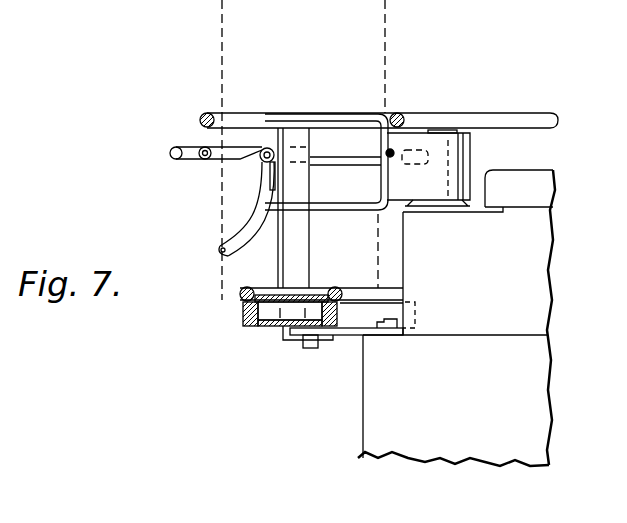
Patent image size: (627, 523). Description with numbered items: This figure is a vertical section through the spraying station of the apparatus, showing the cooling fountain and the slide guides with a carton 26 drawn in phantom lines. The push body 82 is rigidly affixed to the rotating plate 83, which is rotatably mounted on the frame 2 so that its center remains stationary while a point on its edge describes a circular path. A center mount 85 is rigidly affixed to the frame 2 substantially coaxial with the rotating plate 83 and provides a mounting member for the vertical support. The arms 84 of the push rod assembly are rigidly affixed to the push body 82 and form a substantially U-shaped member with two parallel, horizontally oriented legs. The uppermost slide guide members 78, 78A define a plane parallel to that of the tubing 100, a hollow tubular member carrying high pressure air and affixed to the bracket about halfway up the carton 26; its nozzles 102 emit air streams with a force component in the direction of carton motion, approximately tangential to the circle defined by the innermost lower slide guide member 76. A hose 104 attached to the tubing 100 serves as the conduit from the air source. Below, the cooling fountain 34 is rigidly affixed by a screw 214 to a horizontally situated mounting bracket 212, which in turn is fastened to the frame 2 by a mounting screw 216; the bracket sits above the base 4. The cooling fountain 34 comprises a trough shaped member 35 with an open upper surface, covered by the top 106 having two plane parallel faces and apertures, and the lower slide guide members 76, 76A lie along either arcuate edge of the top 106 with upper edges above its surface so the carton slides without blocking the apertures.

The frame 2 is at (566, 308).
The base 4 is at (560, 413).
The carton 26 is at (222, 48).
The cooling fountain 34 is at (246, 322).
The trough shaped member 35 is at (256, 328).
The lower slide guide member 76 is at (337, 290).
The lower slide guide member 76A is at (243, 303).
The upper slide guide member 78 is at (526, 127).
The upper slide guide member 78A is at (203, 113).
The push body 82 is at (436, 193).
The rotating plate 83 is at (552, 244).
The arms 84 is at (359, 119).
The center mount 85 is at (555, 191).
The tubing 100 is at (170, 151).
The nozzles 102 is at (261, 165).
The hose 104 is at (222, 233).
The top 106 is at (270, 294).
The mounting bracket 212 is at (360, 337).
The screw 214 is at (340, 345).
The mounting screw 216 is at (396, 324).